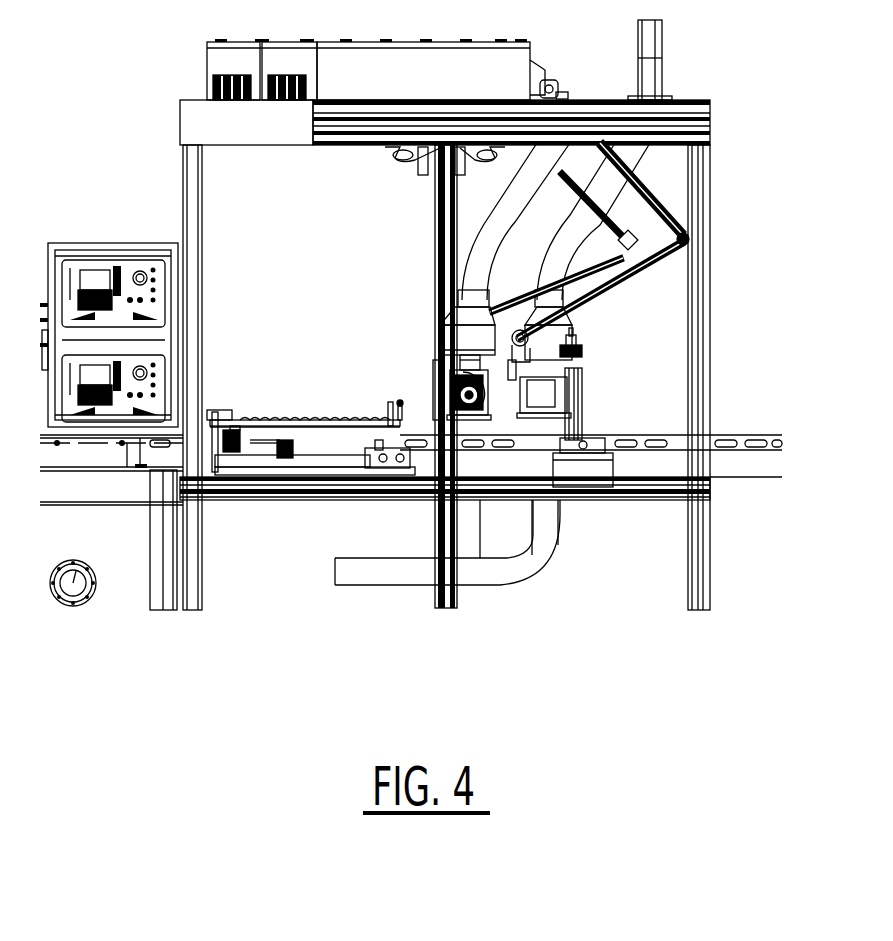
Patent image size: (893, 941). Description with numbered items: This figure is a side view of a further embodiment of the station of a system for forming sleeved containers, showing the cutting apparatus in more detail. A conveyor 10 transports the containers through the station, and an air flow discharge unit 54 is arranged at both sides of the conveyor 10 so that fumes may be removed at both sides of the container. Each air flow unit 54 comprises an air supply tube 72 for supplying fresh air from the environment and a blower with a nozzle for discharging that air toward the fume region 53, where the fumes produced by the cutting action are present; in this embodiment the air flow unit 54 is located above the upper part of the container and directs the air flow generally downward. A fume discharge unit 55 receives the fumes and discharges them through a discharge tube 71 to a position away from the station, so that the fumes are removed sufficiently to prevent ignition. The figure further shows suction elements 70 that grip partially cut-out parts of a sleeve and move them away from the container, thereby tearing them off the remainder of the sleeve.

The conveyor 10 is at (648, 447).
The fume region 53 is at (498, 393).
The air flow discharge unit 54 is at (408, 322).
The fume discharge unit 55 is at (590, 572).
The suction element 70 is at (465, 392).
The discharge tube 71 is at (510, 570).
The air supply tube 72 is at (507, 212).